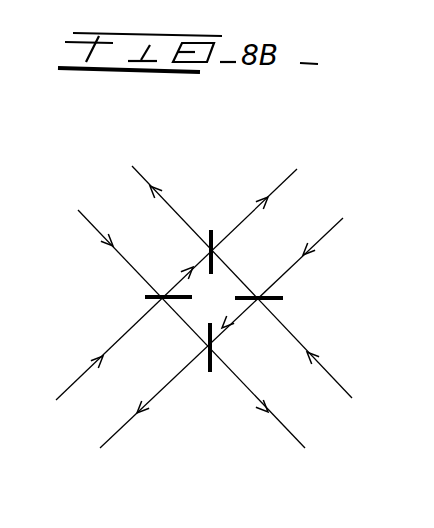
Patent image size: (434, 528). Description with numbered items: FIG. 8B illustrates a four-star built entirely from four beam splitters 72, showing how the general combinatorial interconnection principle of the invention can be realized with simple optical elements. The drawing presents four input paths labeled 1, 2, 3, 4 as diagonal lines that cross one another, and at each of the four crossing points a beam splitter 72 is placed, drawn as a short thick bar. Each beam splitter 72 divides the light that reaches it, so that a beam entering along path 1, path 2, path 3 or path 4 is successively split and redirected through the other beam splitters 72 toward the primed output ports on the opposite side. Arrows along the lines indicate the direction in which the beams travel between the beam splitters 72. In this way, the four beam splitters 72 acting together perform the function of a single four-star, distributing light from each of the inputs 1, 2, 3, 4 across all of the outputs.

The input port 1 is at (184, 340).
The input port 2 is at (166, 289).
The input port 3 is at (228, 342).
The input port 4 is at (246, 288).
The beam splitter 72 is at (210, 232).